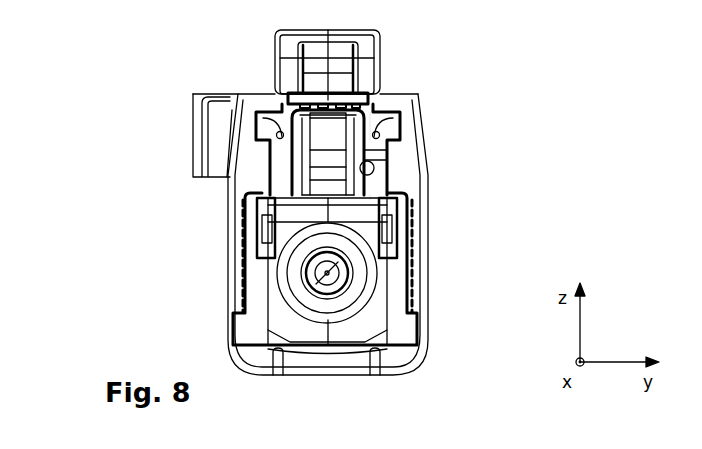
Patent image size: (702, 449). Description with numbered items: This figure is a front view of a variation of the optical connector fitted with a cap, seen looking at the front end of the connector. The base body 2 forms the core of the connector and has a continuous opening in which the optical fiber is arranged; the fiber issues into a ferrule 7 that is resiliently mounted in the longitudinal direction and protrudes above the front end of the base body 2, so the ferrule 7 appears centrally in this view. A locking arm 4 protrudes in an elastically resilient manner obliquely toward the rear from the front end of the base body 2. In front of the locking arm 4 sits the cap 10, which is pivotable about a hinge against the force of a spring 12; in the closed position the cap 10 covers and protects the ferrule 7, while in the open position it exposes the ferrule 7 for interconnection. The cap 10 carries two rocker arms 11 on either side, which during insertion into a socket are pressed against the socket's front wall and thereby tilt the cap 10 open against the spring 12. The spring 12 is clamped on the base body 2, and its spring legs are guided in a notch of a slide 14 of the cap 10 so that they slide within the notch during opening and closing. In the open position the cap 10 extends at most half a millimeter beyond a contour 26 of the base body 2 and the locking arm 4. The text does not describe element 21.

The base body 2 is at (392, 298).
The locking arm 4 is at (385, 63).
The ferrule 7 is at (310, 268).
The cap 10 is at (335, 127).
The rocker arm 11 is at (388, 210).
The spring 12 is at (380, 135).
The slide 14 is at (382, 153).
The housing 21 is at (410, 275).
The contour 26 is at (247, 215).